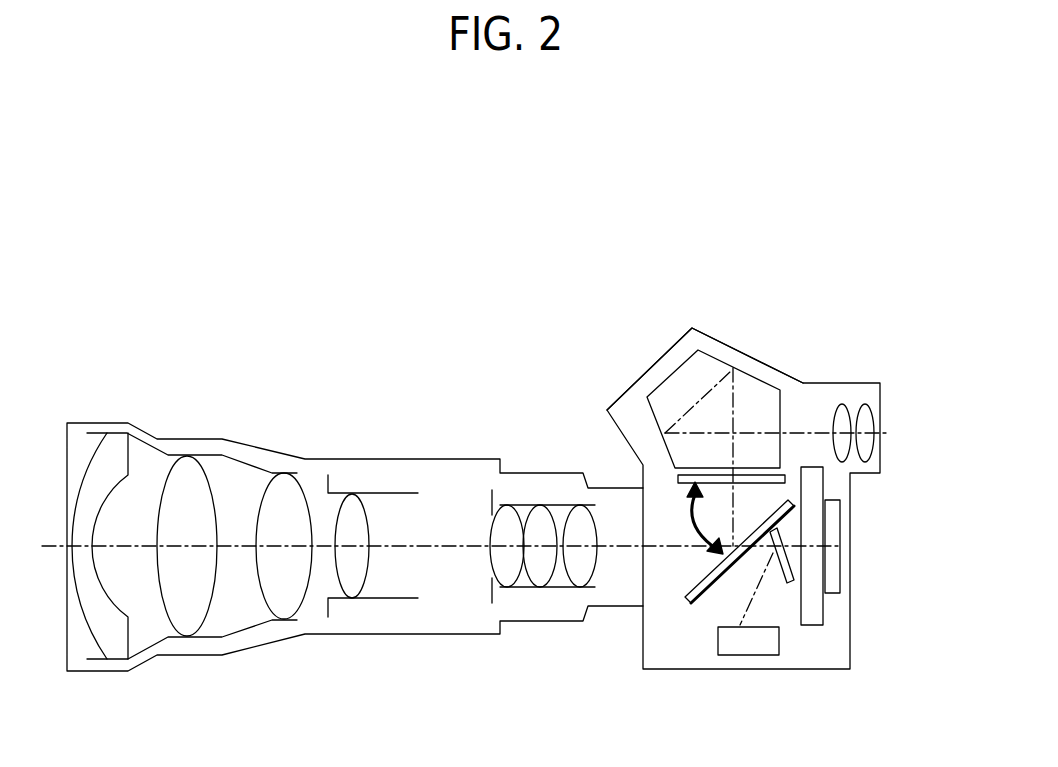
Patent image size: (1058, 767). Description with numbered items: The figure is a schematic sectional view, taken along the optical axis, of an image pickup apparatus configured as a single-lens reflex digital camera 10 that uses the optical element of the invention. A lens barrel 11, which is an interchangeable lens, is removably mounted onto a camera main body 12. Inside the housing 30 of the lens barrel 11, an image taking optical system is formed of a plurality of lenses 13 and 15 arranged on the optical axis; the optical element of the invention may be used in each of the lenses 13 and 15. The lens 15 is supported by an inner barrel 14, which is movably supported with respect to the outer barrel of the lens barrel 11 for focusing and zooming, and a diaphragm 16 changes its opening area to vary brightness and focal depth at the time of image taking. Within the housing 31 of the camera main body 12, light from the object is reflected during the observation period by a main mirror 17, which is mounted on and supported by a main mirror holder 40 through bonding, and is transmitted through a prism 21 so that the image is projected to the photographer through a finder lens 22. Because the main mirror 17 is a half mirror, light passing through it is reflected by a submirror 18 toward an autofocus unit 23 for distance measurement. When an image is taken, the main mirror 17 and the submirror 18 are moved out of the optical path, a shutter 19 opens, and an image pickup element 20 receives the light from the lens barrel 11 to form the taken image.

The single-lens reflex digital camera 10 is at (516, 178).
The lens barrel 11 is at (68, 267).
The camera main body 12 is at (633, 265).
The lens 13 is at (120, 432).
The inner barrel 14 is at (370, 492).
The lens 15 is at (352, 580).
The diaphragm 16 is at (493, 497).
The main mirror 17 is at (687, 588).
The submirror 18 is at (742, 550).
The shutter 19 is at (815, 610).
The image pickup element 20 is at (833, 568).
The prism 21 is at (757, 398).
The finder lens 22 is at (865, 420).
The autofocus (AF) unit 23 is at (743, 647).
The housing of the lens barrel 30 is at (247, 443).
The housing of the camera main body 31 is at (652, 367).
The main mirror holder 40 is at (690, 605).